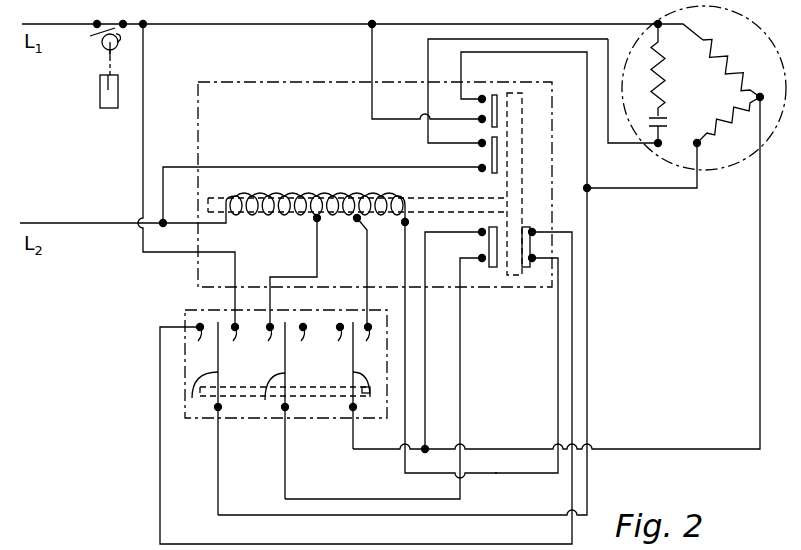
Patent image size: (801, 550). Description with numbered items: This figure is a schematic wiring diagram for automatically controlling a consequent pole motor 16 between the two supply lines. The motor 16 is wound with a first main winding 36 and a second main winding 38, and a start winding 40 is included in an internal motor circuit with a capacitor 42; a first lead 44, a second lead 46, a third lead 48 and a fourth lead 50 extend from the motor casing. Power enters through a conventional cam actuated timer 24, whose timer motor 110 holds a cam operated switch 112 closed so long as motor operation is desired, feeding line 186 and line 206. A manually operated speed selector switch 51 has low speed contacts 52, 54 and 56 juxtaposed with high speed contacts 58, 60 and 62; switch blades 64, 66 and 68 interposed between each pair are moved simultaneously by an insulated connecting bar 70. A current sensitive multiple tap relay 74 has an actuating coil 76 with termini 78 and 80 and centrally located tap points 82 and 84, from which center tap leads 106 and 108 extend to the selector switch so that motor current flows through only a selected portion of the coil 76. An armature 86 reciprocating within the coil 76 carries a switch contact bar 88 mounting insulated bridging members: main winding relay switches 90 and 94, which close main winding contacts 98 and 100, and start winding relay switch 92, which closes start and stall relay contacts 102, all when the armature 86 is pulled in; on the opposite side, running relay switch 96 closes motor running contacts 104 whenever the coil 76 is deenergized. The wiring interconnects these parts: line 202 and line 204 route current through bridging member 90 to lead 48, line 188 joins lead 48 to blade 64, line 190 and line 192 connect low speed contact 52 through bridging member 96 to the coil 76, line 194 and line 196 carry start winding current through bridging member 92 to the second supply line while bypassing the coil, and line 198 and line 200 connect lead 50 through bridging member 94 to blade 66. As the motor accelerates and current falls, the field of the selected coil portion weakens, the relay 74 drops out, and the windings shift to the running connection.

The motor 16 is at (732, 170).
The timer 24 is at (63, 66).
The first main winding 36 is at (727, 57).
The second main winding 38 is at (730, 133).
The start winding 40 is at (665, 86).
The capacitor 42 is at (665, 117).
The first lead 44 is at (522, 30).
The second lead 46 is at (615, 143).
The third lead 48 is at (640, 190).
The fourth lead 50 is at (758, 250).
The speed selector switch 51 is at (183, 316).
The low speed contact 52 is at (200, 344).
The low speed contact 54 is at (270, 349).
The low speed contact 56 is at (338, 349).
The high speed contact 58 is at (237, 344).
The high speed contact 60 is at (302, 344).
The high speed contact 62 is at (372, 344).
The switch blade 64 is at (204, 418).
The switch blade 66 is at (269, 410).
The switch blade 68 is at (367, 385).
The connecting bar 70 is at (299, 396).
The current sensitive multiple tap electrical relay 74 is at (230, 82).
The actuating coil 76 is at (292, 193).
The coil terminus 78 is at (409, 222).
The coil terminus 80 is at (205, 223).
The tap point 82 is at (316, 220).
The tap point 84 is at (356, 220).
The armature 86 is at (456, 194).
The switch contact bar 88 is at (507, 163).
The main winding relay switch 90 is at (494, 100).
The start winding relay switch 92 is at (496, 143).
The main winding relay switch 94 is at (495, 232).
The running relay switch 96 is at (538, 232).
The main winding contacts 98 is at (480, 112).
The main winding contacts 100 is at (466, 245).
The start and stall relay contacts 102 is at (481, 155).
The motor running contacts 104 is at (535, 246).
The center tap lead 106 is at (272, 302).
The center tap lead 108 is at (367, 285).
The timer motor 110 is at (107, 110).
The cam operated switch 112 is at (116, 28).
The line 186 is at (268, 24).
The line 188 is at (588, 370).
The line 190 is at (160, 462).
The line 192 is at (497, 476).
The line 194 is at (487, 39).
The line 196 is at (248, 167).
The line 198 is at (461, 421).
The line 200 is at (427, 373).
The line 202 is at (372, 100).
The line 204 is at (575, 39).
The line 206 is at (143, 152).